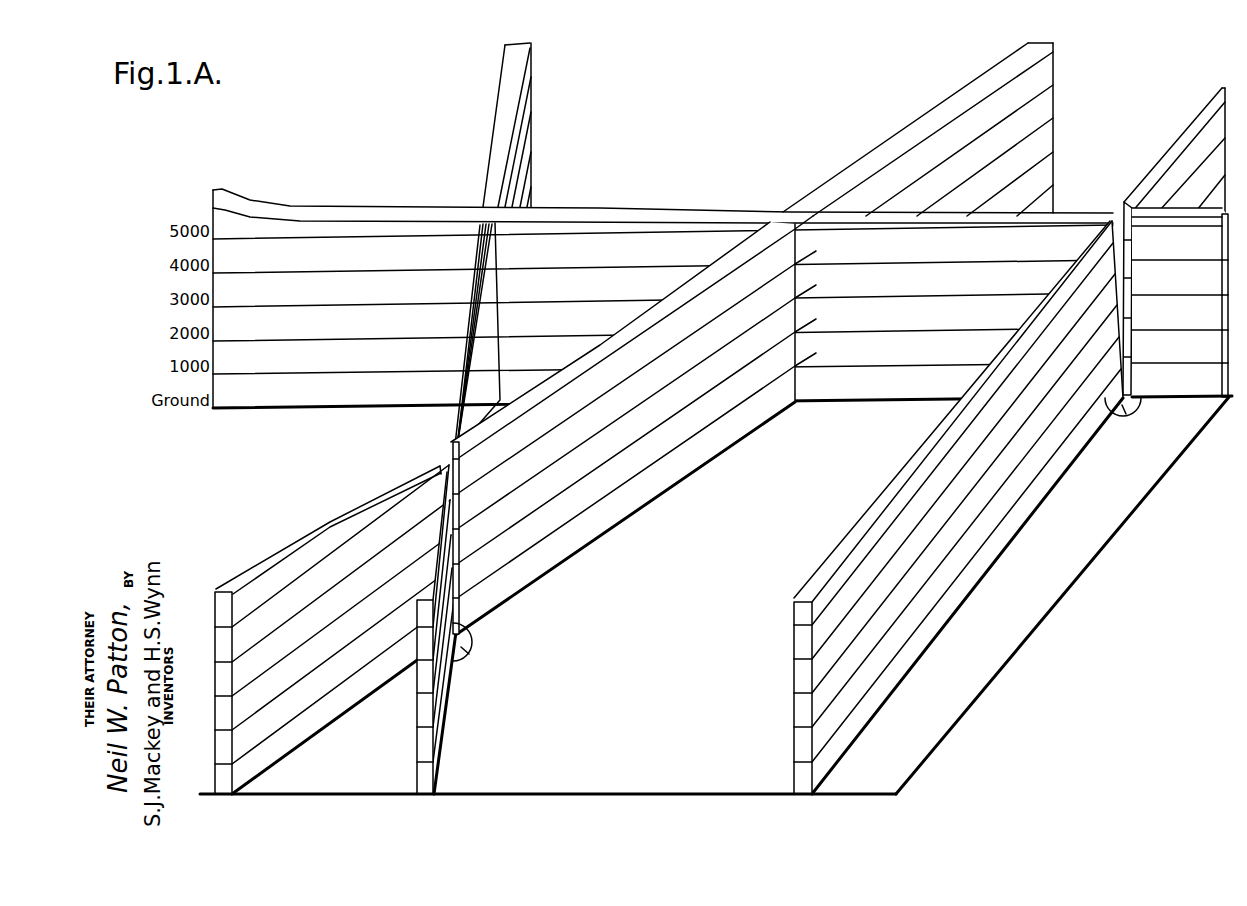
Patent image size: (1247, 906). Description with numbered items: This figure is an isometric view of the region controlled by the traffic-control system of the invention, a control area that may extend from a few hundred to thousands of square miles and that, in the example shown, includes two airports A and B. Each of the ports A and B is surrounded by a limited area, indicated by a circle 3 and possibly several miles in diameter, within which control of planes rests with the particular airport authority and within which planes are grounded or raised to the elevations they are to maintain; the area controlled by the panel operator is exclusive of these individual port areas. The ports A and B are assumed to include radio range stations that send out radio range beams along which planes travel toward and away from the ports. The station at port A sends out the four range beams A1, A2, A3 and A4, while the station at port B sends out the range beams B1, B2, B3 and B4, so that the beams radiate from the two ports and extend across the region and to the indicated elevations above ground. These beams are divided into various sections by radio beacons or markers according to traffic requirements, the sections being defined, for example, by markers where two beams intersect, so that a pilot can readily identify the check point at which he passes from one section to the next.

The circle 3 is at (472, 634).
The airport A is at (470, 659).
The airport B is at (1128, 418).
The range beam A1 is at (224, 794).
The range beam A2 is at (505, 45).
The range beam A3 is at (1053, 43).
The range beam A4 is at (427, 789).
The range beam B1 is at (220, 408).
The range beam B2 is at (1215, 88).
The range beam B3 is at (1232, 388).
The range beam B4 is at (803, 789).